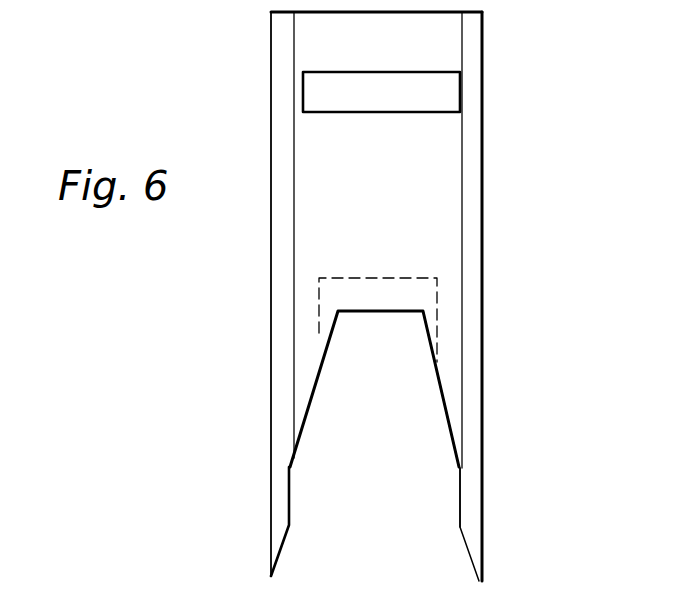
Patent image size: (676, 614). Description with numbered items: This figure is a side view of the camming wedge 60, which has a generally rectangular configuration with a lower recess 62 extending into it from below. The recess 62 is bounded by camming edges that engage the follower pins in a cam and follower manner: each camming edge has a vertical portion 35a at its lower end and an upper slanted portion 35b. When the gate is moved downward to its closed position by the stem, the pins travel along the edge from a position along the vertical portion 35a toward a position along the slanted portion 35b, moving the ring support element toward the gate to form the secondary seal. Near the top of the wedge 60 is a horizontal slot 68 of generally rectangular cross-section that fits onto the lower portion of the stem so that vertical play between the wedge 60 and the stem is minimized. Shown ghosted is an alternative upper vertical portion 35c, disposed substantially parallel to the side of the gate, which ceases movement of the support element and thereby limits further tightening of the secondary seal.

The camming wedge 60 is at (487, 150).
The horizontal slot 68 is at (394, 103).
The lower recess 62 is at (378, 390).
The vertical portion 35a is at (461, 486).
The upper slanted portion 35b is at (433, 342).
The upper vertical portion 35c is at (437, 289).